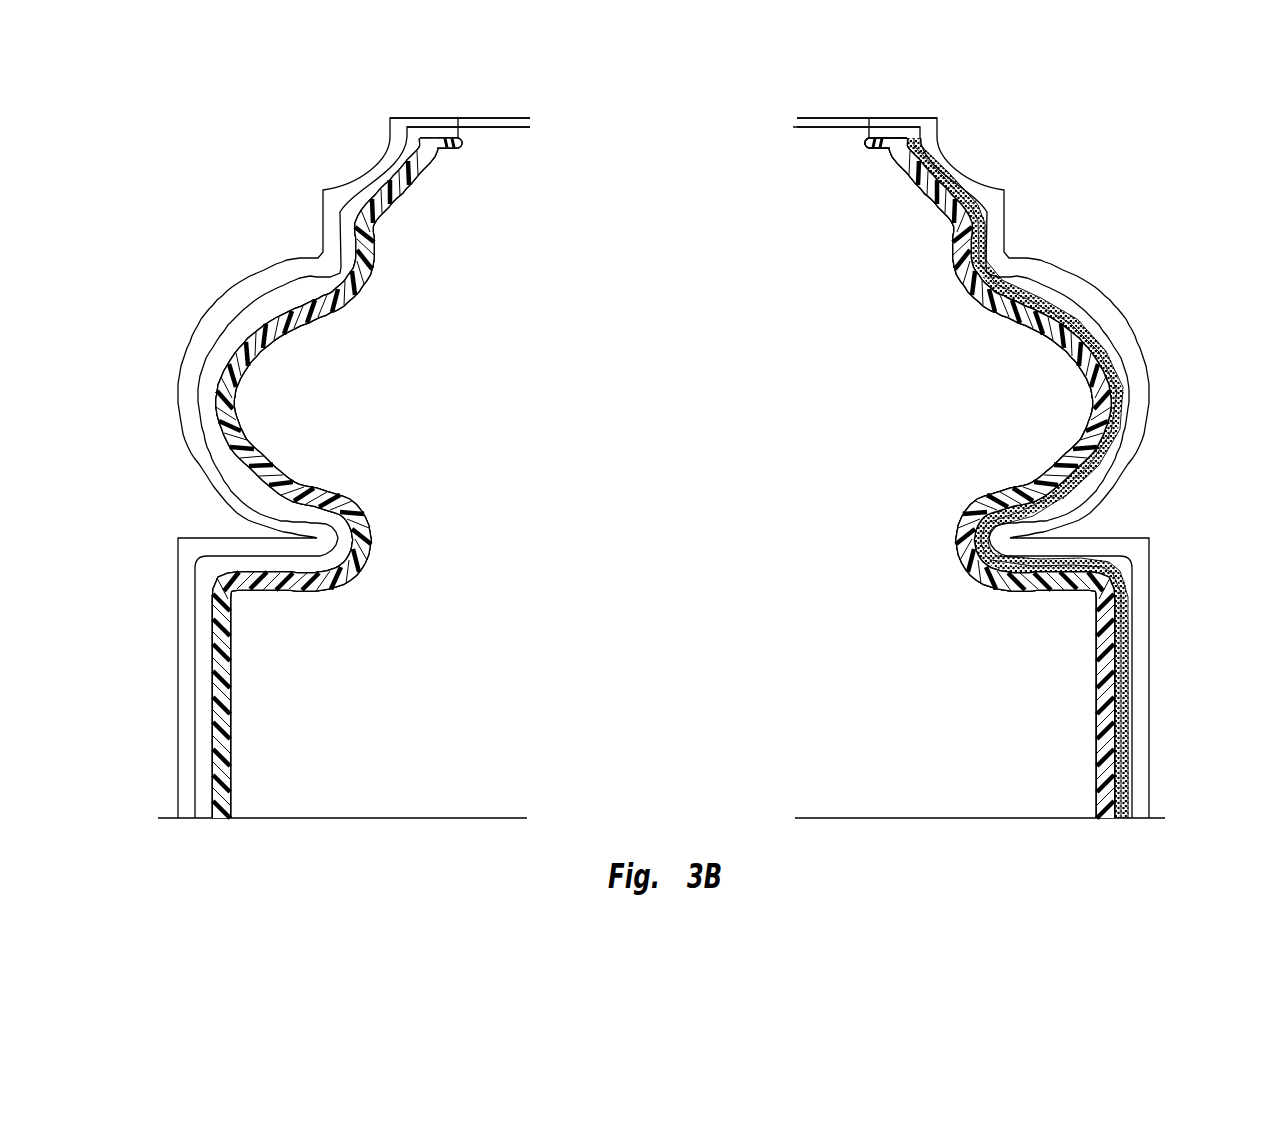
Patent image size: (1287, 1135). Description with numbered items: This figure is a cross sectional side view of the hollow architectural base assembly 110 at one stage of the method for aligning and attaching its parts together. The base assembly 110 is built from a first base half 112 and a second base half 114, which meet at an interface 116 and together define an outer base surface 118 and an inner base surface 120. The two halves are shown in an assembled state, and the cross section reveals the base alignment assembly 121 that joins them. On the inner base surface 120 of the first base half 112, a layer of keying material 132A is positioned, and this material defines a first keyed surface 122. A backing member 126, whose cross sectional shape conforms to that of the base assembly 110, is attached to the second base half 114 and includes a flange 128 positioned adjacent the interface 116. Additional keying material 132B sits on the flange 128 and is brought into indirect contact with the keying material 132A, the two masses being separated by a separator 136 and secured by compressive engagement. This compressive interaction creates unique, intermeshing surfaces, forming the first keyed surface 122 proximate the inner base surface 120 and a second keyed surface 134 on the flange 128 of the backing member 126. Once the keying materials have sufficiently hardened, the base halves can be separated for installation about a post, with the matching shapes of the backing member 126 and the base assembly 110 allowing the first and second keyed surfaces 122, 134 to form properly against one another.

The base assembly 110 is at (597, 188).
The first base half 112 is at (1117, 307).
The second base half 114 is at (256, 262).
The interface 116 is at (201, 820).
The outer base surface 118 is at (207, 478).
The inner base surface 120 is at (340, 240).
The base alignment assembly 121 is at (359, 587).
The first keyed surface 122 is at (1120, 357).
The backing member 126 is at (265, 450).
The flange 128 is at (918, 200).
The keying material 132A is at (1077, 310).
The keying material 132B is at (1085, 328).
The second keyed surface 134 is at (1073, 307).
The separator 136 is at (1030, 282).